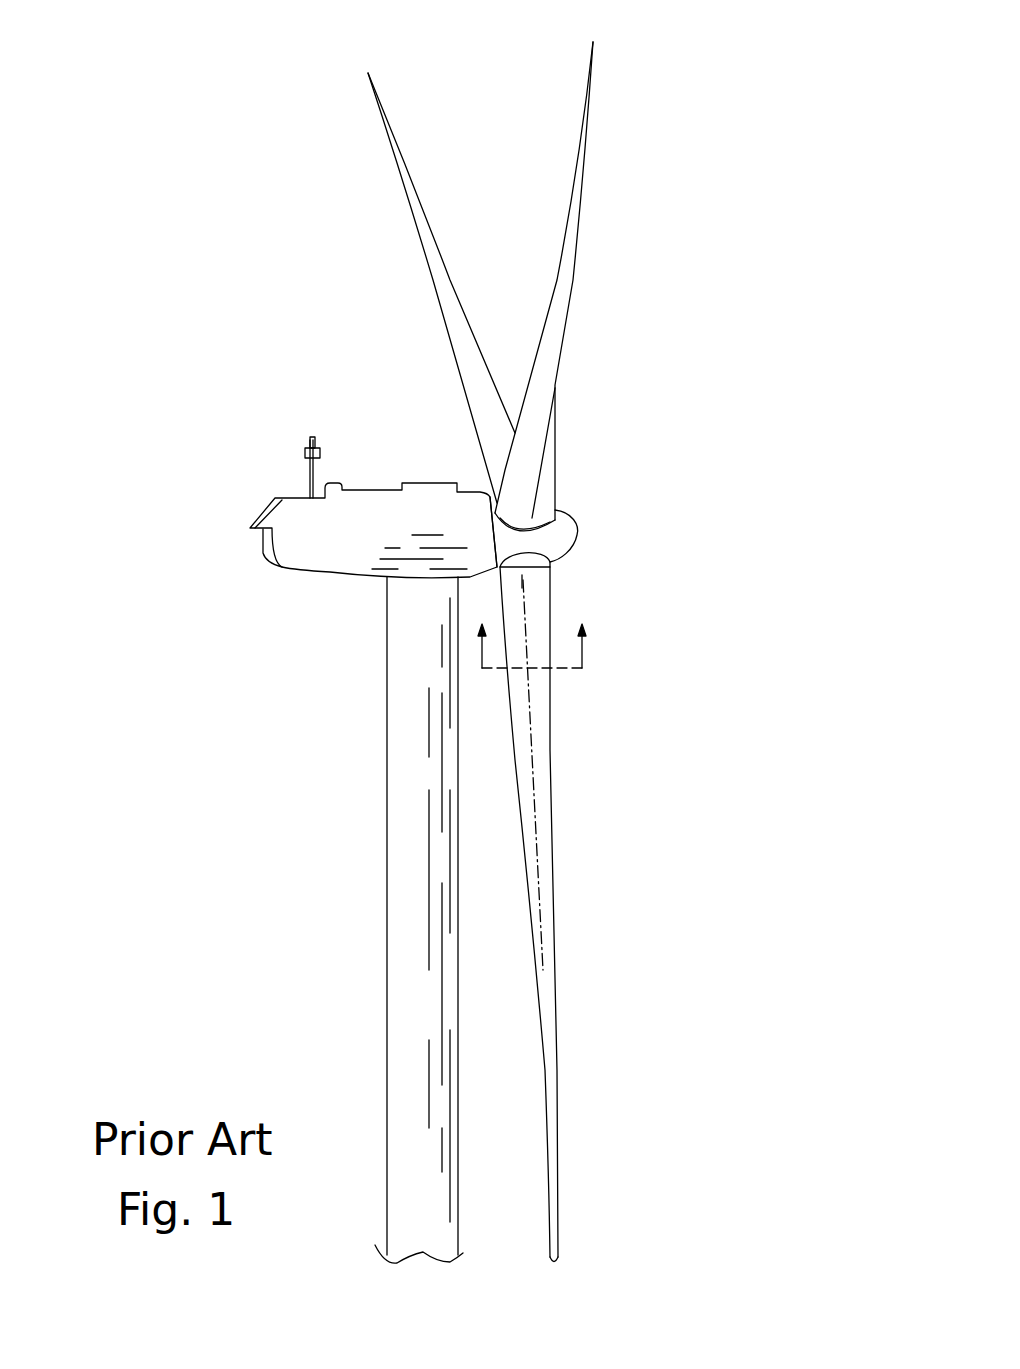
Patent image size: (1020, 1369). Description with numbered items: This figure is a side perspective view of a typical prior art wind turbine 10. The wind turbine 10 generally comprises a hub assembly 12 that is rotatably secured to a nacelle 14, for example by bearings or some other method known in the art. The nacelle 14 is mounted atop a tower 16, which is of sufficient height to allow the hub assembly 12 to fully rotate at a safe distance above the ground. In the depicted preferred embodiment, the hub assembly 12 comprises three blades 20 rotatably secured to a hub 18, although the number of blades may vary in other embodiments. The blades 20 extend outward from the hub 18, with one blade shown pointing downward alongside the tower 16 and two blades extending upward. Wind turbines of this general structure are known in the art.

The wind turbine 10 is at (270, 339).
The hub assembly 12 is at (639, 406).
The nacelle 14 is at (333, 572).
The tower 16 is at (385, 862).
The hub 18 is at (570, 545).
The blades 20 is at (405, 163).